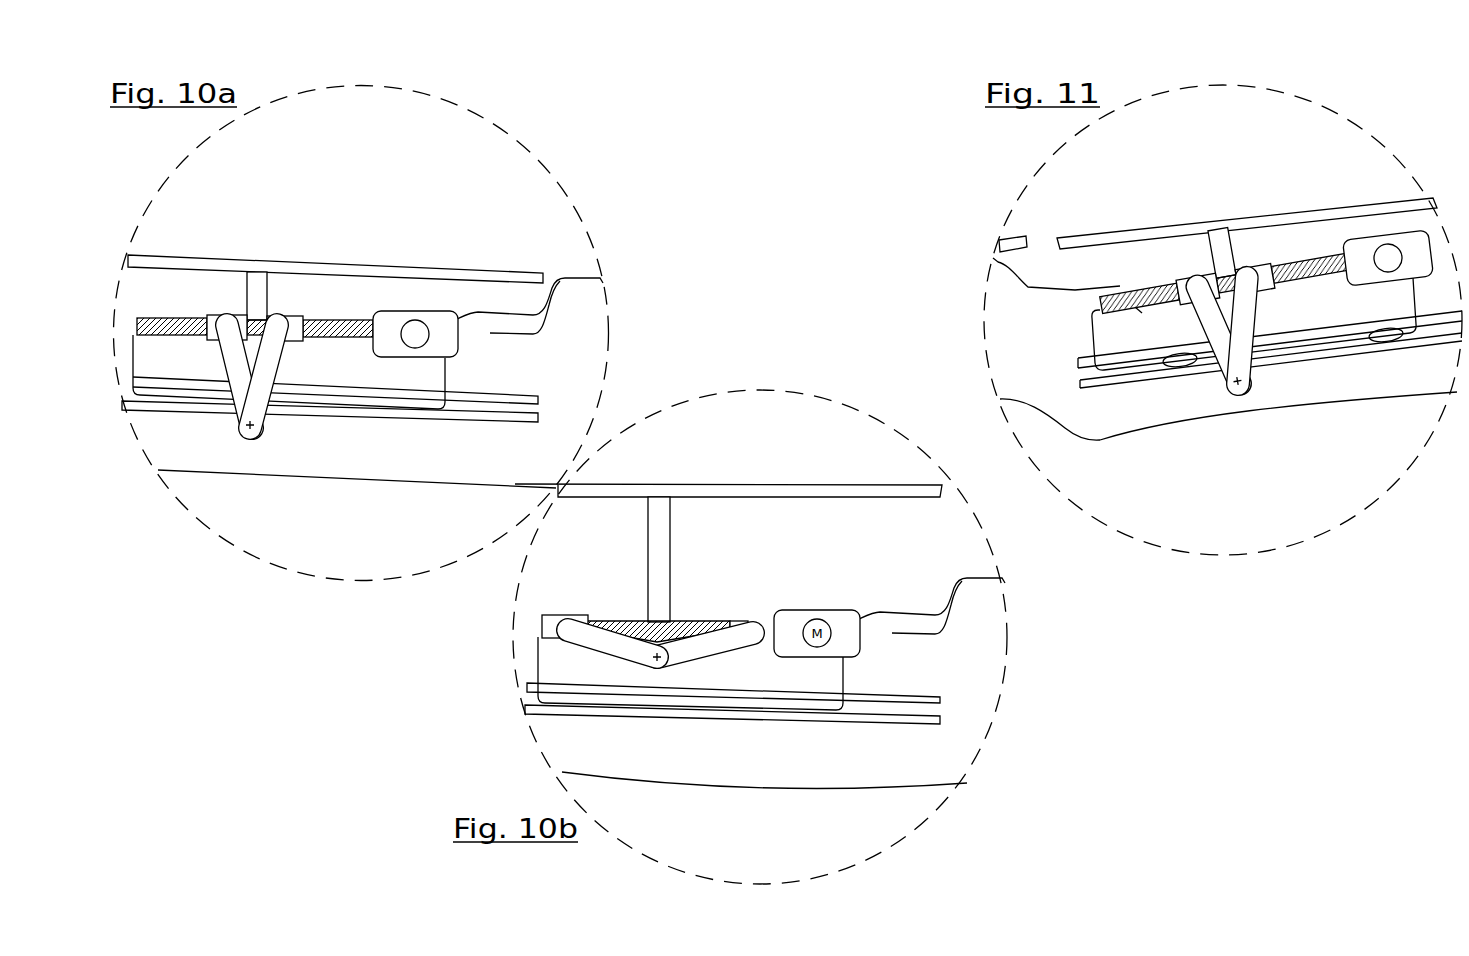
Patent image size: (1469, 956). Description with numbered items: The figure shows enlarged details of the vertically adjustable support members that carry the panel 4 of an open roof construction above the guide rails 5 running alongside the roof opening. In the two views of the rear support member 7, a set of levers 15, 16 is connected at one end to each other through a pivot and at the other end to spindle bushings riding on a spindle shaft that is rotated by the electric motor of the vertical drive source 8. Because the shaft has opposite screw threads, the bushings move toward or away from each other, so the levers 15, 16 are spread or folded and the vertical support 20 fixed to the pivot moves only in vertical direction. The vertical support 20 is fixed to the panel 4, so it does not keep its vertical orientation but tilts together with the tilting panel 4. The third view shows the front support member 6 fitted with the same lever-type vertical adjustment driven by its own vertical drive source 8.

In FIG. 10A, the panel 4 is at (520, 277).
In FIG. 10B, the panel 4 is at (863, 490).
In FIG. 11, the panel 4 is at (1334, 205).
In FIG. 10A, the guide rail 5 is at (533, 400).
In FIG. 10B, the guide rail 5 is at (928, 708).
In FIG. 11, the guide rail 5 is at (1090, 374).
In FIG. 11, the front support member 6 is at (1268, 242).
In FIG. 10A, the rear support member 7 is at (310, 268).
In FIG. 10B, the rear support member 7 is at (767, 583).
In FIG. 11, the rear support member 7 is at (985, 553).
In FIG. 10A, the vertical drive source 8 is at (450, 322).
In FIG. 11, the vertical drive source 8 is at (1420, 242).
In FIG. 10A, the lever 15 is at (242, 393).
In FIG. 10B, the lever 15 is at (584, 637).
In FIG. 10A, the lever 16 is at (260, 403).
In FIG. 10B, the lever 16 is at (692, 647).
In FIG. 10A, the vertical support 20 is at (253, 297).
In FIG. 10B, the vertical support 20 is at (662, 558).
In FIG. 11, the vertical support 20 is at (1212, 240).